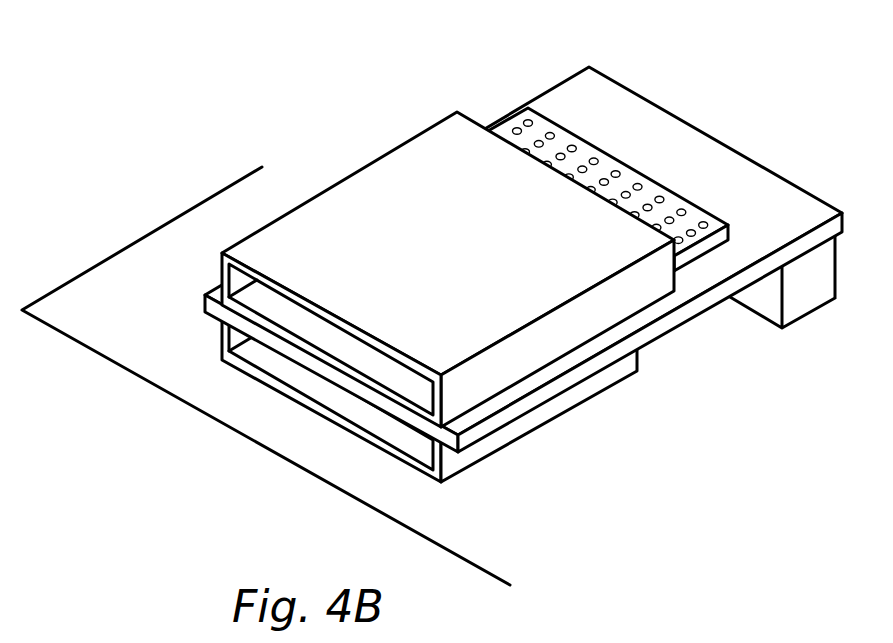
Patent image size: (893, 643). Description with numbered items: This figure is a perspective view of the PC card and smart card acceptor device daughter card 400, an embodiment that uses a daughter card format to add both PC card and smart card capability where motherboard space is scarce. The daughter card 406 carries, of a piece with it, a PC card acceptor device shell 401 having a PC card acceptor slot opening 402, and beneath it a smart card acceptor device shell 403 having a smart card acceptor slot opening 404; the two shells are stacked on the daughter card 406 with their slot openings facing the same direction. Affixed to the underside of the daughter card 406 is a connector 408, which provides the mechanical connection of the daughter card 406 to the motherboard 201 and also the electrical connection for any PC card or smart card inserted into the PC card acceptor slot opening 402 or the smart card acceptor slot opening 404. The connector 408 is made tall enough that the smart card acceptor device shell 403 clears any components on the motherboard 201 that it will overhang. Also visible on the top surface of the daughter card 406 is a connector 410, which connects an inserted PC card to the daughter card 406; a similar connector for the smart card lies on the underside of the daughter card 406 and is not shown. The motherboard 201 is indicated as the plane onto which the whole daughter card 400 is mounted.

The motherboard 201 is at (65, 303).
The PC card and smart card acceptor device daughter card 400 is at (498, 260).
The PC card acceptor device shell 401 is at (483, 250).
The PC card acceptor slot opening 402 is at (291, 318).
The smart card acceptor device shell 403 is at (246, 372).
The smart card acceptor slot opening 404 is at (341, 404).
The daughter card 406 is at (731, 180).
The connector 408 is at (797, 322).
The connector 410 is at (580, 147).